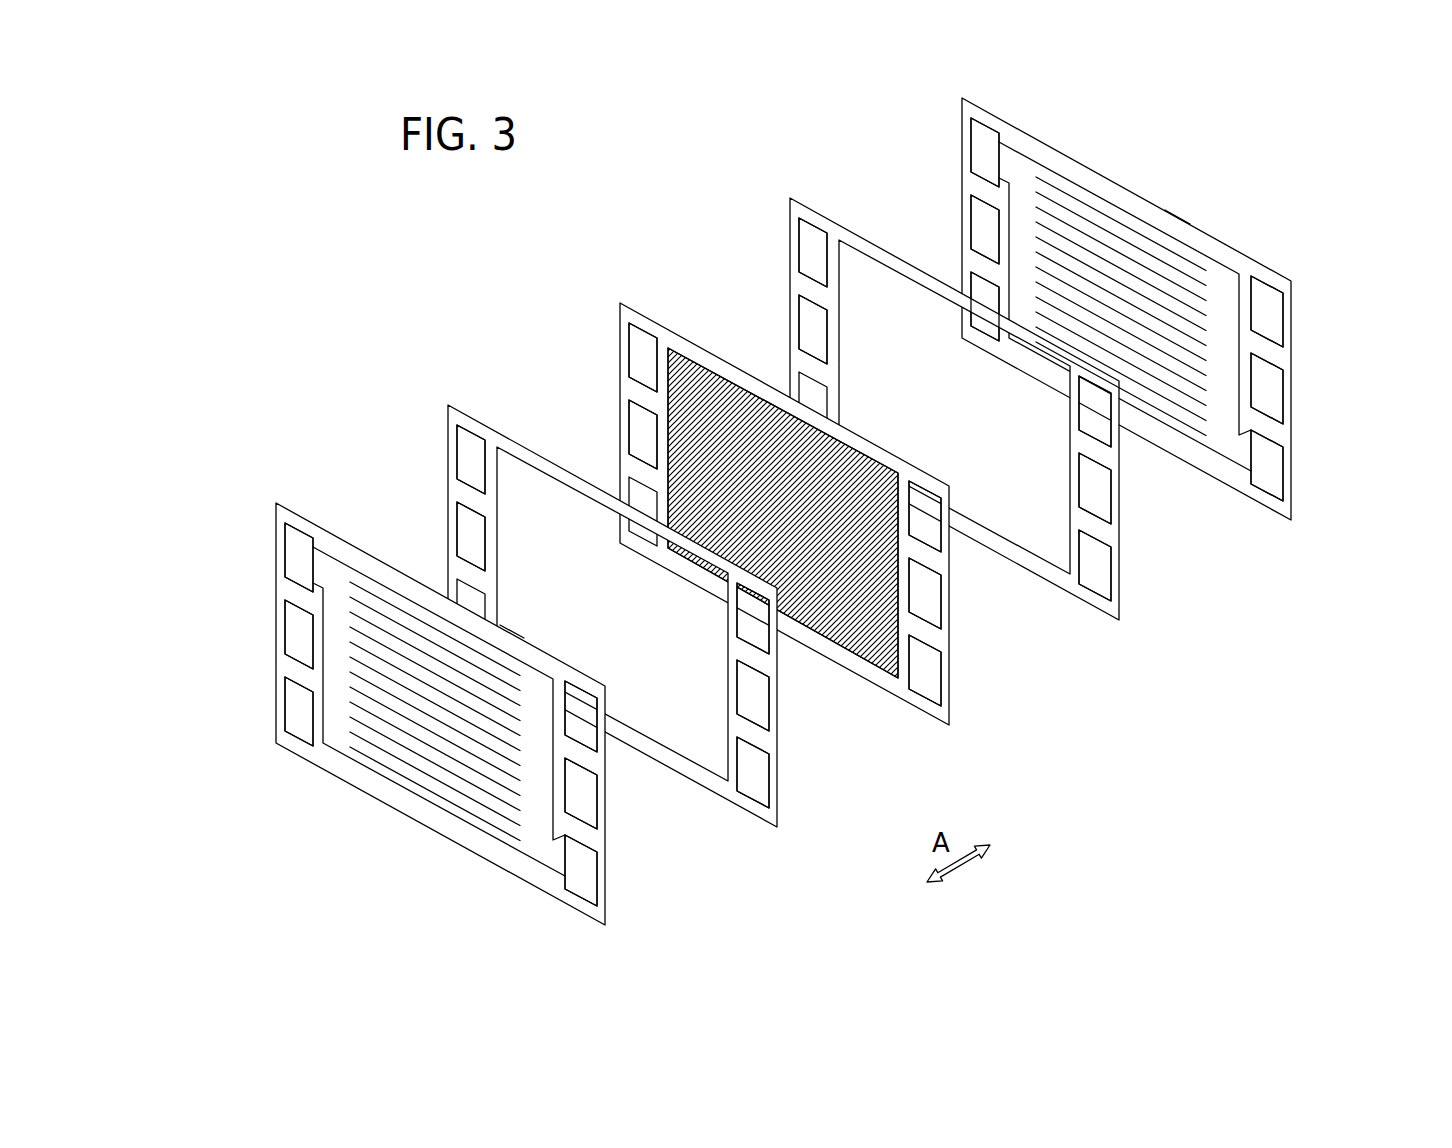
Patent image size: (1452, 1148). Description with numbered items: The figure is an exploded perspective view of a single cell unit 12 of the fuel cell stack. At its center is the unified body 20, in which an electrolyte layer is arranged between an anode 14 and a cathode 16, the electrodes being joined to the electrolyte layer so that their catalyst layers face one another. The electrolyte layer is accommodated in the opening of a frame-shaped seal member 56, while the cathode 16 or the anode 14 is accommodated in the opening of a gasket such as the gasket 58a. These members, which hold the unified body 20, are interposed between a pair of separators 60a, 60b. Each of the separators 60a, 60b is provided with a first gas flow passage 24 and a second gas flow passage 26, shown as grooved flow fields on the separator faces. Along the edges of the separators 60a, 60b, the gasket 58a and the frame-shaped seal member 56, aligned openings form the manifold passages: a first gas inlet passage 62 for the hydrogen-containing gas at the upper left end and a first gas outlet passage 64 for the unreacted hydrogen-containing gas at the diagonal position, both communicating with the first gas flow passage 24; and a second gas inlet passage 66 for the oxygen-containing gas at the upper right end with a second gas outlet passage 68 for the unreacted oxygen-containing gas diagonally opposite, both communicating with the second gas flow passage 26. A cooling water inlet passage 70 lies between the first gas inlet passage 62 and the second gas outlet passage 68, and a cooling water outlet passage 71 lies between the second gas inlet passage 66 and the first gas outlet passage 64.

The cell unit 12 is at (784, 493).
The anode 14 is at (755, 370).
The cathode 16 is at (688, 368).
The unified body 20 is at (905, 470).
The first gas flow passage 24 is at (403, 777).
The second gas flow passage 26 is at (512, 627).
The frame-shaped seal member 56 is at (622, 330).
The gasket 58a is at (530, 450).
The separator 60a is at (502, 868).
The separator 60b is at (1103, 192).
The first gas inlet passage 62 is at (458, 442).
The first gas outlet passage 64 is at (585, 870).
The second gas inlet passage 66 is at (580, 715).
The second gas outlet passage 68 is at (292, 717).
The cooling water inlet passage 70 is at (462, 522).
The cooling water outlet passage 71 is at (585, 790).